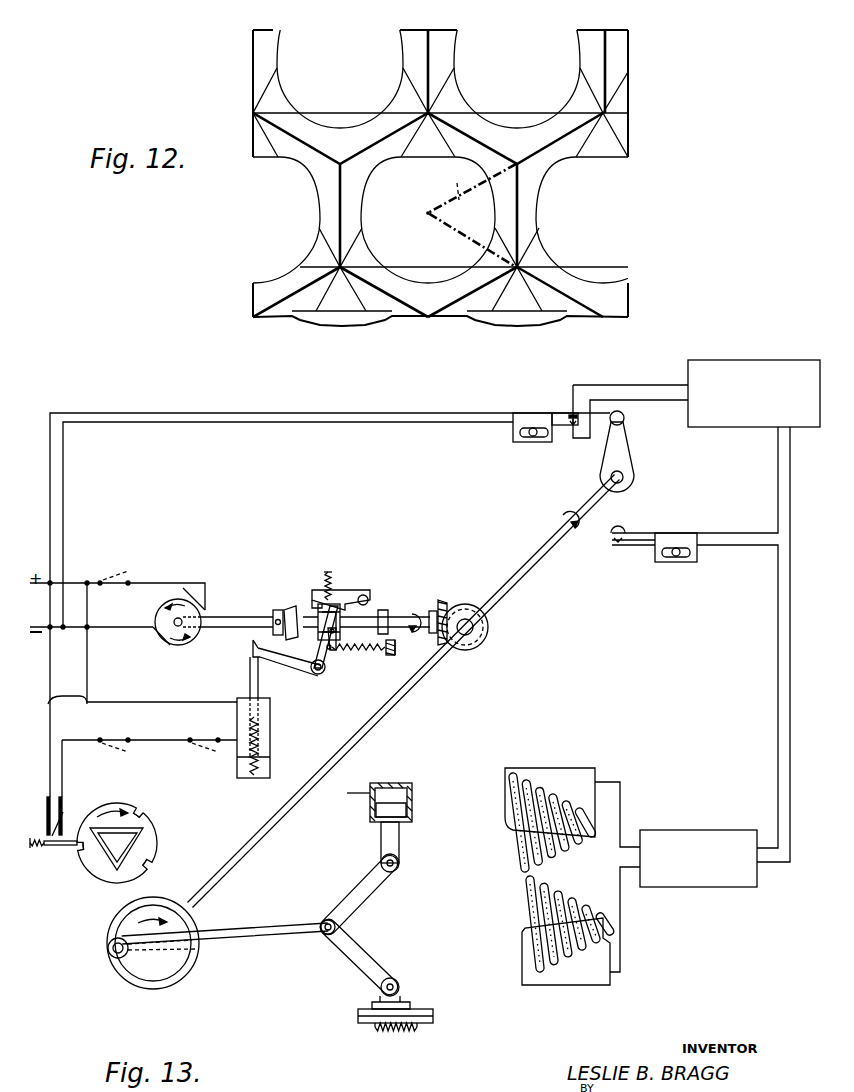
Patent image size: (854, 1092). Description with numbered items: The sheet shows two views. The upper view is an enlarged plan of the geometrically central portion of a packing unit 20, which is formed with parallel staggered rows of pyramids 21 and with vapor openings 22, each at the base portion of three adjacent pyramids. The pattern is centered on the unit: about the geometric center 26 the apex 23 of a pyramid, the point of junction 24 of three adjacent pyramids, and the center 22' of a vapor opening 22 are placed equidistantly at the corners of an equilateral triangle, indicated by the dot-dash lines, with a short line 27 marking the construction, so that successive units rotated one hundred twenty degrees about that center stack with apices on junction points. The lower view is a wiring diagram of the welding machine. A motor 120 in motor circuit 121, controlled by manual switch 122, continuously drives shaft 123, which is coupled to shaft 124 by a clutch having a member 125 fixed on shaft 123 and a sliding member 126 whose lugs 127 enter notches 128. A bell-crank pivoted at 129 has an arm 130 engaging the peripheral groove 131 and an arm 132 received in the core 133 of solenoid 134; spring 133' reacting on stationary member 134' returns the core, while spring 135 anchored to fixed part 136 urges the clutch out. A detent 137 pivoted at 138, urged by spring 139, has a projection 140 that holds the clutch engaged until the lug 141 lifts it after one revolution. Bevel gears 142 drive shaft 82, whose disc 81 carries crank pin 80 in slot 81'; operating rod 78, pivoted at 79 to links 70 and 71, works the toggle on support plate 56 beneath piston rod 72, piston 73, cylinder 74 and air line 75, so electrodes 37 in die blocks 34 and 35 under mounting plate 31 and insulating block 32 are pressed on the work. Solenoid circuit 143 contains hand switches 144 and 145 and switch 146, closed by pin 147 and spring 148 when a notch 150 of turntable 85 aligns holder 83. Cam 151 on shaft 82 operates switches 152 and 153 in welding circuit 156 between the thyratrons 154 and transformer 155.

In FIG. 12, the packing unit 20 is at (630, 100).
In FIG. 12, the pyramid 21 is at (338, 190).
In FIG. 12, the vapor opening 22 is at (428, 156).
In FIG. 12, the center of the vapor opening 22' is at (410, 201).
In FIG. 12, the apex of the pyramid 23 is at (340, 162).
In FIG. 12, the point of junction 24 is at (437, 111).
In FIG. 12, the geometric center 26 is at (483, 218).
In FIG. 12, the reference line 27 is at (449, 183).
In FIG. 13, the mounting plate 31 is at (434, 1012).
In FIG. 13, the insulating block 32 is at (434, 1021).
In FIG. 13, the die block 34 is at (556, 773).
In FIG. 13, the die block 35 is at (584, 978).
In FIG. 13, the welding electrodes 37 is at (533, 843).
In FIG. 13, the support plate 56 is at (417, 1002).
In FIG. 13, the link 70 is at (371, 955).
In FIG. 13, the link 71 is at (367, 899).
In FIG. 13, the piston rod 72 is at (400, 842).
In FIG. 13, the piston 73 is at (401, 811).
In FIG. 13, the cylinder 74 is at (386, 782).
In FIG. 13, the air line 75 is at (348, 795).
In FIG. 13, the operating rod 78 is at (268, 922).
In FIG. 13, the pivot connection 79 is at (345, 928).
In FIG. 13, the crank pin 80 is at (110, 953).
In FIG. 13, the disc 81 is at (153, 958).
In FIG. 13, the diametrically disposed slot 81' is at (182, 959).
In FIG. 13, the driven shaft 82 is at (263, 842).
In FIG. 13, the holder 83 is at (134, 857).
In FIG. 13, the turntable 85 is at (151, 840).
In FIG. 13, the electric motor 120 is at (176, 645).
In FIG. 13, the motor circuit 121 is at (147, 586).
In FIG. 13, the manual switch 122 is at (120, 580).
In FIG. 13, the shaft 123 is at (213, 617).
In FIG. 13, the shaft 124 is at (395, 619).
In FIG. 13, the clutch member 125 is at (318, 608).
In FIG. 13, the clutch member 126 is at (316, 605).
In FIG. 13, the lugs 127 is at (315, 623).
In FIG. 13, the notches 128 is at (282, 620).
In FIG. 13, the pivot 129 is at (327, 658).
In FIG. 13, the arm 130 is at (340, 657).
In FIG. 13, the peripheral groove 131 is at (368, 598).
In FIG. 13, the arm 132 is at (292, 664).
In FIG. 13, the core 133 is at (225, 707).
In FIG. 13, the coil spring 133' is at (283, 746).
In FIG. 13, the solenoid 134 is at (279, 738).
In FIG. 13, the stationary member 134' is at (266, 776).
In FIG. 13, the coil spring 135 is at (393, 657).
In FIG. 13, the fixed part 136 is at (397, 656).
In FIG. 13, the detent 137 is at (342, 592).
In FIG. 13, the pivot 138 is at (388, 612).
In FIG. 13, the spring 139 is at (331, 590).
In FIG. 13, the projection 140 is at (329, 573).
In FIG. 13, the lug 141 is at (392, 630).
In FIG. 13, the bevel gears 142 is at (458, 606).
In FIG. 13, the solenoid circuit 143 is at (142, 712).
In FIG. 13, the hand operated switch 144 is at (115, 739).
In FIG. 13, the hand operated switch 145 is at (207, 739).
In FIG. 13, the switch 146 is at (63, 812).
In FIG. 13, the pin 147 is at (48, 852).
In FIG. 13, the spring 148 is at (37, 852).
In FIG. 13, the notches 150 is at (134, 809).
In FIG. 13, the cam 151 is at (628, 452).
In FIG. 13, the switch 152 is at (513, 440).
In FIG. 13, the switch 153 is at (667, 533).
In FIG. 13, the thyratrons 154 is at (745, 360).
In FIG. 13, the transformer 155 is at (690, 832).
In FIG. 13, the welding circuit 156 is at (342, 425).